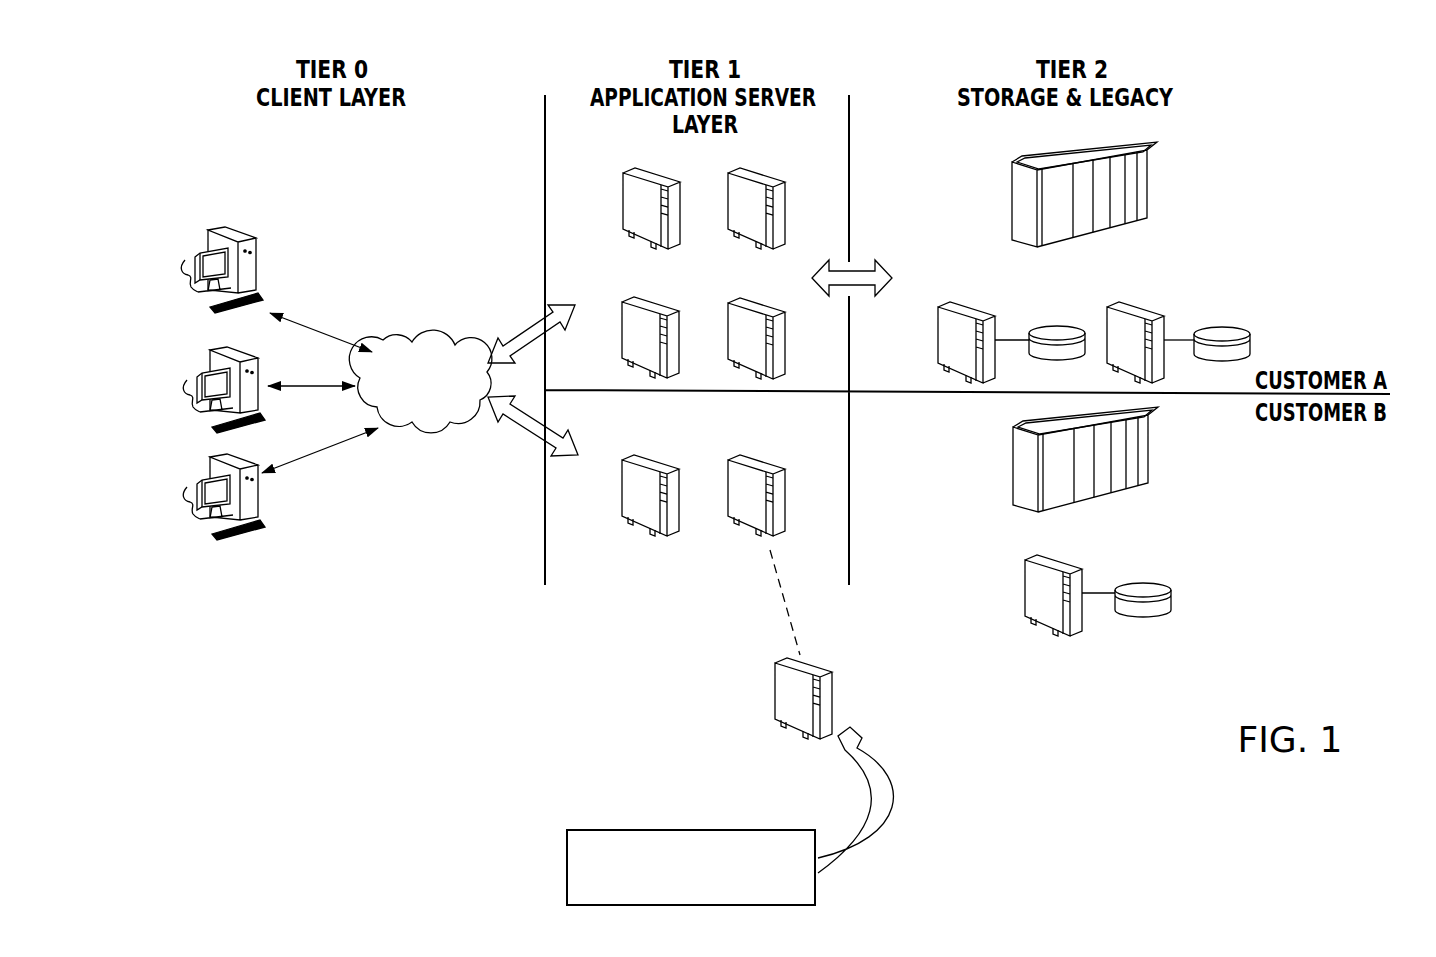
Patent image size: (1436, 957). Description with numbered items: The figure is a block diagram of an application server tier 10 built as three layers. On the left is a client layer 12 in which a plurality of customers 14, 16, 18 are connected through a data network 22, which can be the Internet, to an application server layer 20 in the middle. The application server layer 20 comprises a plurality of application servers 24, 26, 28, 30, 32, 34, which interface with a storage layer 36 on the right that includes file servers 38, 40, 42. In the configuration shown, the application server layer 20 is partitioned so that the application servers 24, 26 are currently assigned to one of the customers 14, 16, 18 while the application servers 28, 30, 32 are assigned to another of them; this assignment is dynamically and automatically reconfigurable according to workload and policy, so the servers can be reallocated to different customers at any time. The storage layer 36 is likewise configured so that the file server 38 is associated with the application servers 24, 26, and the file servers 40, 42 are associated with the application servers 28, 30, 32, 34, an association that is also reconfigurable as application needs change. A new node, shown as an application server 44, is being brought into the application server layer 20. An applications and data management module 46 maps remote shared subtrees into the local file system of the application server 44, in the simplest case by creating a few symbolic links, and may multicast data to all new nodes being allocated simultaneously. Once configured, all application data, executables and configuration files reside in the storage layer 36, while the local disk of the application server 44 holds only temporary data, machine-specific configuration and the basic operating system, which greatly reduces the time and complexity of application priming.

The application server tier 10 is at (1297, 158).
The client layer 12 is at (410, 283).
The customer 14 is at (263, 252).
The customer 16 is at (264, 372).
The customer 18 is at (250, 462).
The application server layer 20 is at (618, 668).
The data network 22 is at (445, 425).
The application server 24 is at (762, 473).
The application server 26 is at (627, 475).
The application server 28 is at (762, 313).
The application server 30 is at (627, 317).
The application server 32 is at (627, 187).
The application server 34 is at (763, 184).
The storage layer 36 is at (1030, 672).
The file server 38 is at (1060, 570).
The file server 40 is at (975, 313).
The file server 42 is at (1143, 313).
The application server 44 is at (776, 664).
The applications and data management module 46 is at (567, 866).